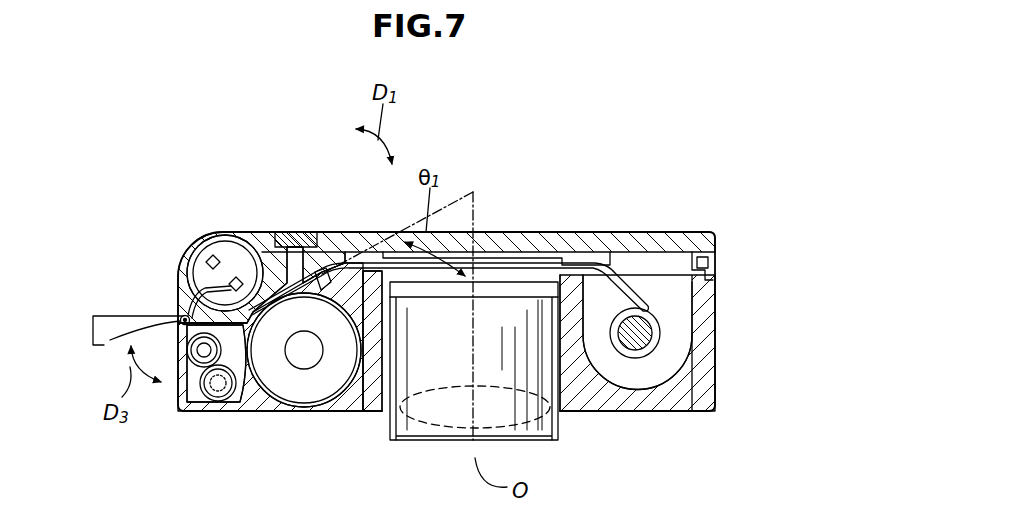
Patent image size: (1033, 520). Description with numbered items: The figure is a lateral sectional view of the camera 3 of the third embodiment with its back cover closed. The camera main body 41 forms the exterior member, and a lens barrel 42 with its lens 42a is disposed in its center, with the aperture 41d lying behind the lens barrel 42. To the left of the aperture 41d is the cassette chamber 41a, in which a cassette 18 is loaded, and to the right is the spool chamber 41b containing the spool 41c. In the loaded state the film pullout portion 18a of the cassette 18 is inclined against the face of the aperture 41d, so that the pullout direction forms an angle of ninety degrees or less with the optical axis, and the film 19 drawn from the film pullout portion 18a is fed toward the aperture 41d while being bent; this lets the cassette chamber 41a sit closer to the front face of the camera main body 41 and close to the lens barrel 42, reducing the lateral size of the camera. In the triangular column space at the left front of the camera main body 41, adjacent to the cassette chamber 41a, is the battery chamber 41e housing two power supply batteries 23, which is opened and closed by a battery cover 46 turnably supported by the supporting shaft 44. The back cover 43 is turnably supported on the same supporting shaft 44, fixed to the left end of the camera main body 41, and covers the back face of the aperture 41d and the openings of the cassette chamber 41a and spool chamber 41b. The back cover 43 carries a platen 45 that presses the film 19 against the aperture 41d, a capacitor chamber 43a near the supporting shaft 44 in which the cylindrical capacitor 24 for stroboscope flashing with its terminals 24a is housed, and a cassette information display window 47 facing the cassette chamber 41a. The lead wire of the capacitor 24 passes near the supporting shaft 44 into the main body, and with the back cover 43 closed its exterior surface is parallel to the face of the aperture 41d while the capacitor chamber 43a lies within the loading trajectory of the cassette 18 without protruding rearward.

The camera 3 is at (697, 196).
The cassette 18 is at (280, 378).
The film pullout portion 18a is at (325, 274).
The film 19 is at (612, 257).
The power supply batteries 23 is at (200, 368).
The capacitor 24 is at (226, 253).
The engaging pieces 24a is at (203, 254).
The camera main body 41 is at (636, 400).
The cassette chamber 41a is at (332, 395).
The spool chamber 41b is at (673, 373).
The spool 41c is at (647, 337).
The aperture 41d is at (497, 268).
The battery chamber 41e is at (218, 398).
The lens barrel 42 is at (555, 440).
The lens 42a is at (418, 428).
The back cover 43 is at (650, 232).
The capacitor chamber 43a is at (243, 243).
The supporting shaft 44 is at (180, 312).
The platen 45 is at (530, 260).
The battery cover 46 is at (118, 313).
The cassette information display window 47 is at (303, 231).